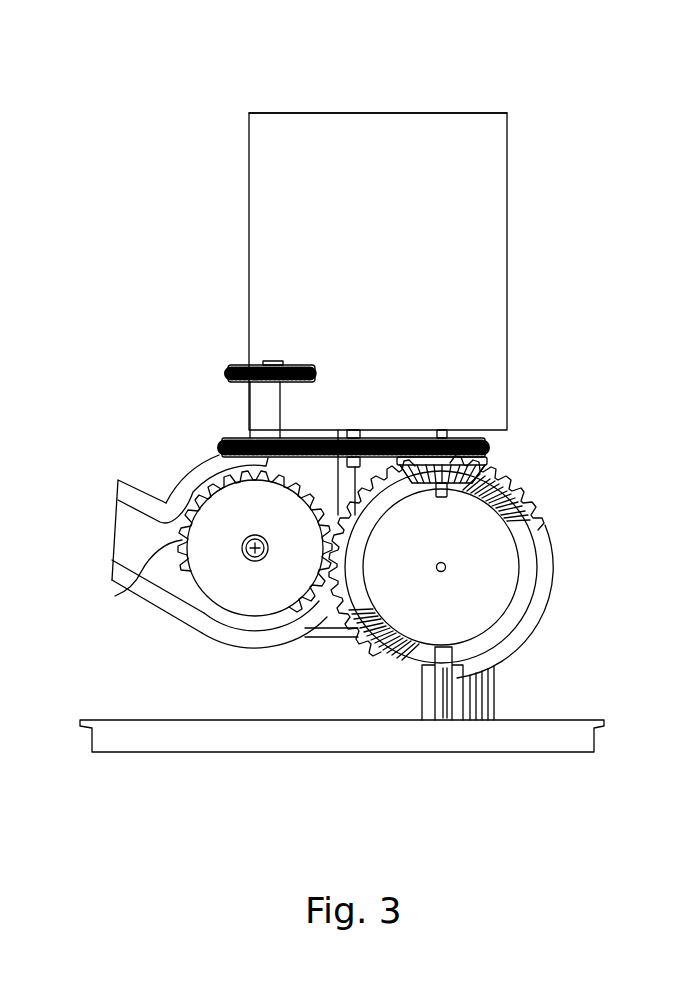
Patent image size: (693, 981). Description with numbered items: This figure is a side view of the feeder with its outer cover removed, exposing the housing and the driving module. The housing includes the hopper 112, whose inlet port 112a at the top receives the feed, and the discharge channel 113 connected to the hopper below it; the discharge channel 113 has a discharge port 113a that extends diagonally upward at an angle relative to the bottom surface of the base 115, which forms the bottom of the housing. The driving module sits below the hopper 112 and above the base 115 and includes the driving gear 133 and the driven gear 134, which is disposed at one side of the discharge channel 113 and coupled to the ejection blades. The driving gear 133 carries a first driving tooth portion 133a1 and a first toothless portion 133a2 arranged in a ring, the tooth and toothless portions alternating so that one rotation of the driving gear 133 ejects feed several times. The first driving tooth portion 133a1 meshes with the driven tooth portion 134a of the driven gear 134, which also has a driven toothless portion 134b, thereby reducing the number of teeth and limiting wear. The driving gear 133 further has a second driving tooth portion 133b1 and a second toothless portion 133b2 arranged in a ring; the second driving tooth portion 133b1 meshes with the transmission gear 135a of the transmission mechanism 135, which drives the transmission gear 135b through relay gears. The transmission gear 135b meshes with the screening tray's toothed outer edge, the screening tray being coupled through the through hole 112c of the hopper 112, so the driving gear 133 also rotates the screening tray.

The hopper 112 is at (508, 177).
The inlet port 112a is at (426, 100).
The through hole 112c is at (270, 356).
The discharge channel 113 is at (190, 474).
The discharge port 113a is at (100, 520).
The base 115 is at (584, 740).
The driving gear 133 is at (508, 548).
The first driving tooth portion 133a1 is at (409, 670).
The first toothless portion 133a2 is at (533, 652).
The second driving tooth portion 133b1 is at (512, 486).
The second toothless portion 133b2 is at (545, 597).
The driven gear 134 is at (255, 616).
The driven tooth portion 134a is at (115, 596).
The driven toothless portion 134b is at (190, 608).
The transmission mechanism 135 is at (400, 392).
The transmission gear 135a is at (490, 466).
The transmission gear 135b is at (228, 373).